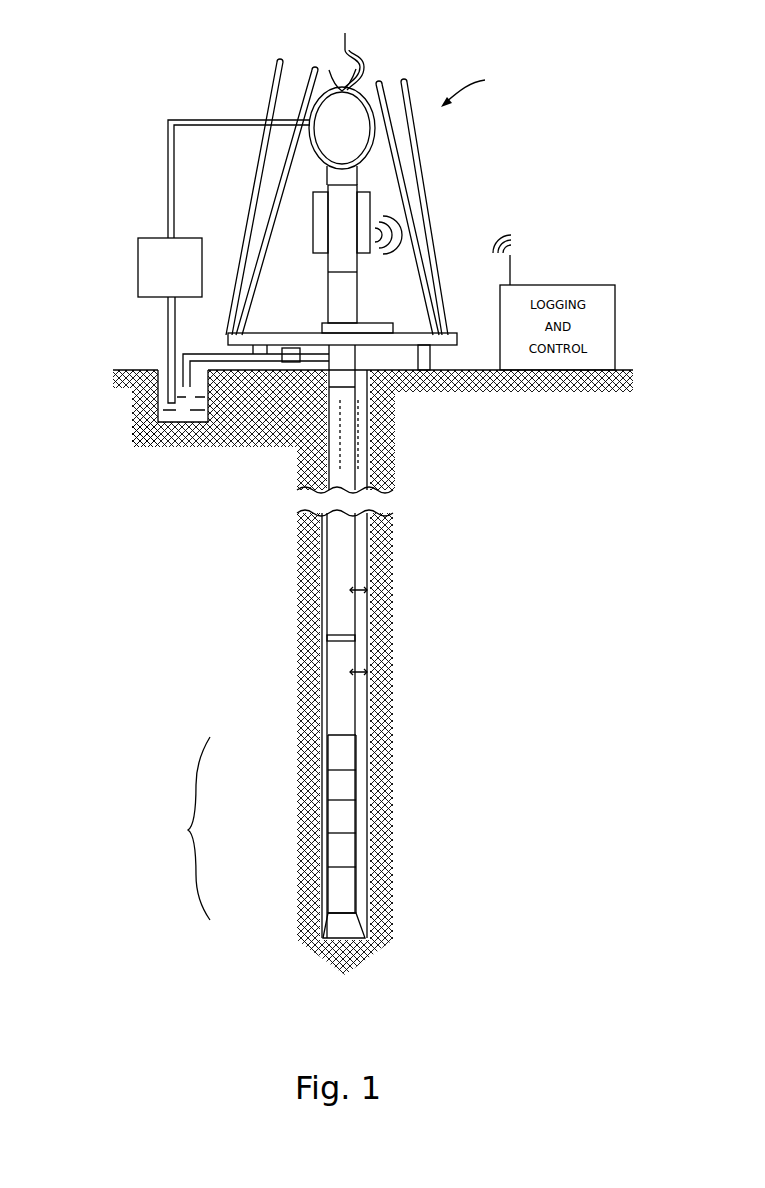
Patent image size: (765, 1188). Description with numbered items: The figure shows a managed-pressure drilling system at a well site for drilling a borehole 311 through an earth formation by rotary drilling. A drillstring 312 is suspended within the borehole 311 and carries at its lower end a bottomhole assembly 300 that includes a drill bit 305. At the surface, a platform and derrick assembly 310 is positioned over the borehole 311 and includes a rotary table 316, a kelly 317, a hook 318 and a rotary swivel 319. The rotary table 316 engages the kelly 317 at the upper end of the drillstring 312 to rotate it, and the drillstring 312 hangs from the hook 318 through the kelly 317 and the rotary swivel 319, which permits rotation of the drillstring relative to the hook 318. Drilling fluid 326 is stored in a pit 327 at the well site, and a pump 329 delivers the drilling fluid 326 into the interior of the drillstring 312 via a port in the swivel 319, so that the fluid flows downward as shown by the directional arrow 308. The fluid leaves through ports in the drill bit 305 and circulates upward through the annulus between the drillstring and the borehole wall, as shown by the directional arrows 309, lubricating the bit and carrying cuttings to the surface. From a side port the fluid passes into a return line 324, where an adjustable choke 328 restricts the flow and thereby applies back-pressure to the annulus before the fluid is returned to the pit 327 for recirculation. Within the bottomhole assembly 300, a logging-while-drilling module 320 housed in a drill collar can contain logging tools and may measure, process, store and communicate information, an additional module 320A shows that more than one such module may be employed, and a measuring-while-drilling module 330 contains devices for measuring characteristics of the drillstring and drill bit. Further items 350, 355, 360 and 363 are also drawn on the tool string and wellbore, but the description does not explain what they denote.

The bottomhole assembly 300 is at (188, 830).
The drill bit 305 is at (333, 927).
The directional arrow 308 is at (307, 487).
The directional arrows 309 is at (300, 437).
The platform and derrick assembly 310 is at (477, 83).
The borehole 311 is at (367, 366).
The drillstring 312 is at (341, 366).
The rotary table 316 is at (362, 330).
The kelly 317 is at (338, 290).
The hook 318 is at (341, 47).
The rotary swivel 319 is at (343, 113).
The logging-while-drilling module 320 is at (335, 785).
The additional LWD/MWD module 320A is at (337, 847).
The return line 324 is at (230, 353).
The drilling fluid 326 is at (168, 423).
The pit 327 is at (163, 367).
The adjustable choke 328 is at (285, 362).
The pump 329 is at (153, 237).
The measuring-while-drilling module 330 is at (347, 817).
The sensor 350 is at (350, 887).
The collar 355 is at (327, 638).
The annulus region 360 is at (373, 677).
The module 363 is at (345, 750).